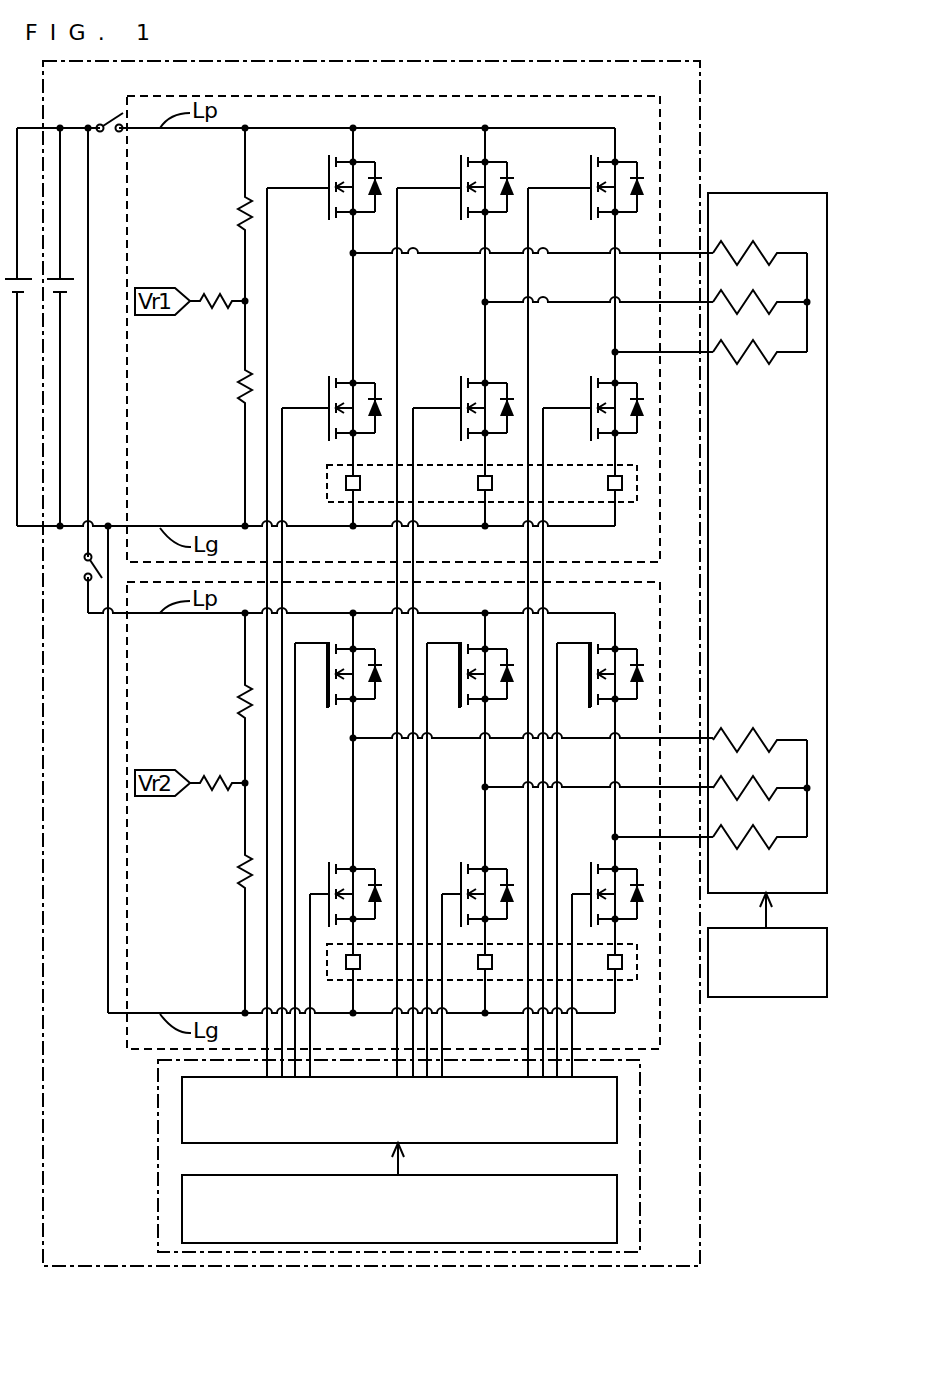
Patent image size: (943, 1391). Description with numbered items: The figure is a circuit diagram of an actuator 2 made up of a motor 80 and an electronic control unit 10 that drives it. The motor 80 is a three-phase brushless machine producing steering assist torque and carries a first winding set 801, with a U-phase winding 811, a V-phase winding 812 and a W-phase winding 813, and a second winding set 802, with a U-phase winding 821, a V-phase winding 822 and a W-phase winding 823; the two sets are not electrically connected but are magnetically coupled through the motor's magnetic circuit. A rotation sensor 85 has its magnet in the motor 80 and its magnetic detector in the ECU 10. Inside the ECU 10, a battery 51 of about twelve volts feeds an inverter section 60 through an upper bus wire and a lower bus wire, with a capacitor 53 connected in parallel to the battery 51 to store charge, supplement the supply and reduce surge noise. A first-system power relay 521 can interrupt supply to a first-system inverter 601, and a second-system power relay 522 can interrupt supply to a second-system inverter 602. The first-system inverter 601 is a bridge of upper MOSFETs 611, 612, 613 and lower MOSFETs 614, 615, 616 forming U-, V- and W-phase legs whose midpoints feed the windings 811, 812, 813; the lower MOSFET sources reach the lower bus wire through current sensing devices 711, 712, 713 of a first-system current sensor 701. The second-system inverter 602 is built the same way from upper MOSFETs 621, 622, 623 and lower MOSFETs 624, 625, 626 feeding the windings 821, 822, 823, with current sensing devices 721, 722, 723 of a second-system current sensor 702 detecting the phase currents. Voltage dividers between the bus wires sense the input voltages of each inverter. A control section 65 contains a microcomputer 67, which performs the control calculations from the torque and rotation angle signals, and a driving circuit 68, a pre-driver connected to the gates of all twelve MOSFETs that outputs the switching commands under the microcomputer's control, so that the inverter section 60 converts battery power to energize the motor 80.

The actuator 2 is at (805, 153).
The electronic control unit 10 is at (717, 170).
The battery 51 is at (21, 278).
The capacitor 53 is at (64, 278).
The first-system power relay 521 is at (107, 121).
The second-system power relay 522 is at (82, 570).
The inverter section 60 is at (362, 587).
The first-system inverter 601 is at (330, 95).
The second-system inverter 602 is at (140, 1051).
The upper MOSFET 611 is at (376, 165).
The upper MOSFET 612 is at (508, 165).
The upper MOSFET 613 is at (620, 161).
The lower MOSFET 614 is at (357, 380).
The lower MOSFET 615 is at (489, 380).
The lower MOSFET 616 is at (614, 380).
The upper MOSFET 621 is at (345, 647).
The upper MOSFET 622 is at (476, 647).
The upper MOSFET 623 is at (644, 628).
The lower MOSFET 624 is at (357, 866).
The lower MOSFET 625 is at (489, 866).
The lower MOSFET 626 is at (614, 866).
The control section 65 is at (642, 1072).
The microcomputer 67 is at (618, 1202).
The driving circuit 68 is at (618, 1112).
The first-system current sensor 701 is at (653, 494).
The second-system current sensor 702 is at (653, 970).
The current sensing device 711 is at (345, 483).
The current sensing device 712 is at (477, 486).
The current sensing device 713 is at (607, 486).
The current sensing device 721 is at (345, 962).
The current sensing device 722 is at (477, 962).
The current sensing device 723 is at (607, 962).
The motor 80 is at (792, 193).
The first winding set 801 is at (760, 412).
The second winding set 802 is at (761, 684).
The U-phase winding 811 is at (763, 248).
The V-phase winding 812 is at (768, 296).
The W-phase winding 813 is at (777, 364).
The U-phase winding 821 is at (752, 676).
The V-phase winding 822 is at (770, 786).
The W-phase winding 823 is at (777, 849).
The rotation sensor 85 is at (768, 998).